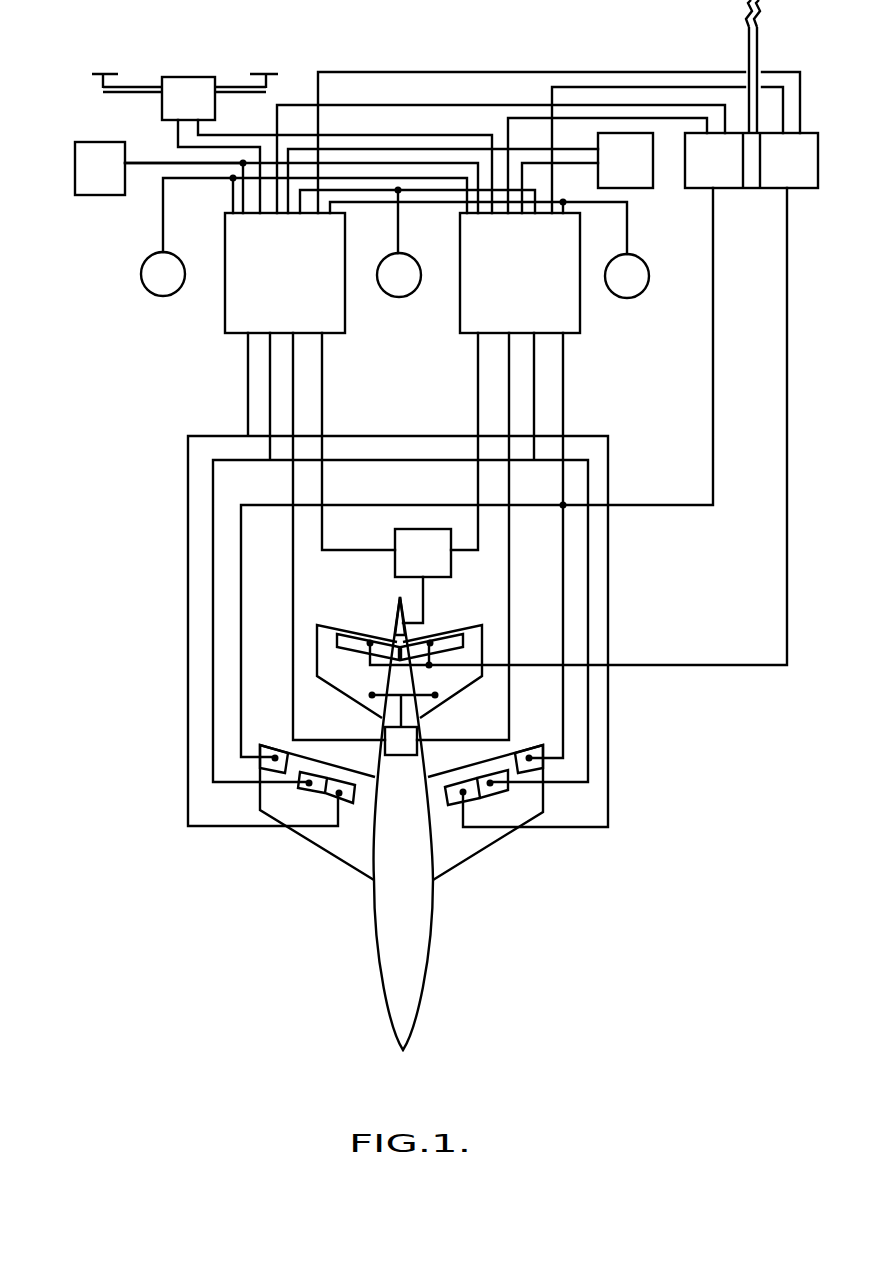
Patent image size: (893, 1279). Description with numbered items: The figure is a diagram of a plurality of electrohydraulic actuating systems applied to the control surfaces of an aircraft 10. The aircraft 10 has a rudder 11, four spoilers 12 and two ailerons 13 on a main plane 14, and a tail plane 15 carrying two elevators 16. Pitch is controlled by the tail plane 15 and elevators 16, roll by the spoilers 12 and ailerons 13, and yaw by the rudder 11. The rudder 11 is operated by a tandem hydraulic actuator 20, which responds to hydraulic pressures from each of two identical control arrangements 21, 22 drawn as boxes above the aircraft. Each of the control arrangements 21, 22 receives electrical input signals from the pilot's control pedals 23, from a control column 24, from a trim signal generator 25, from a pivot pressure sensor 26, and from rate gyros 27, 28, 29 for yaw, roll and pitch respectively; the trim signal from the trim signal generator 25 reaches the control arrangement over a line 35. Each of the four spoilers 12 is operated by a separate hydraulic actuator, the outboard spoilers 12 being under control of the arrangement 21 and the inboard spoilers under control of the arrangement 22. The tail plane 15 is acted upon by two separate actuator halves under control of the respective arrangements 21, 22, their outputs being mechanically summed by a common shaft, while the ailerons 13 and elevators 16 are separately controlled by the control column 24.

The aircraft 10 is at (412, 953).
The rudder 11 is at (398, 615).
The spoilers 12 is at (500, 892).
The ailerons 13 is at (535, 748).
The main plane 14 is at (353, 850).
The tail plane 15 is at (453, 675).
The elevators 16 is at (447, 638).
The tandem hydraulic actuator 20 is at (417, 550).
The control arrangement 21 is at (238, 310).
The control arrangement 22 is at (475, 302).
The pilot's control pedals 23 is at (197, 73).
The control column 24 is at (760, 54).
The trim signal generator 25 is at (90, 185).
The pivot pressure sensor 26 is at (632, 170).
The yaw rate gyro 27 is at (160, 278).
The roll rate gyro 28 is at (393, 280).
The pitch rate gyro 29 is at (630, 282).
The line 35 is at (143, 167).